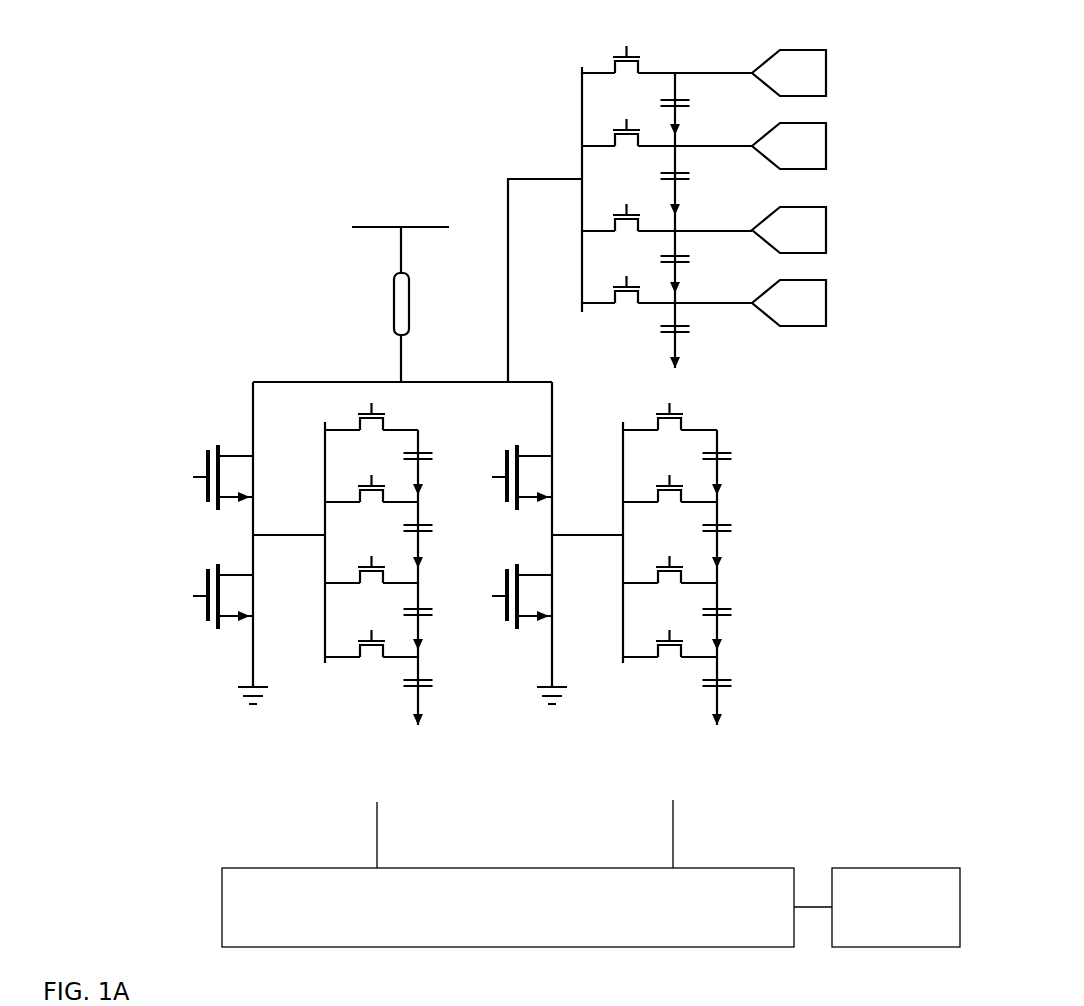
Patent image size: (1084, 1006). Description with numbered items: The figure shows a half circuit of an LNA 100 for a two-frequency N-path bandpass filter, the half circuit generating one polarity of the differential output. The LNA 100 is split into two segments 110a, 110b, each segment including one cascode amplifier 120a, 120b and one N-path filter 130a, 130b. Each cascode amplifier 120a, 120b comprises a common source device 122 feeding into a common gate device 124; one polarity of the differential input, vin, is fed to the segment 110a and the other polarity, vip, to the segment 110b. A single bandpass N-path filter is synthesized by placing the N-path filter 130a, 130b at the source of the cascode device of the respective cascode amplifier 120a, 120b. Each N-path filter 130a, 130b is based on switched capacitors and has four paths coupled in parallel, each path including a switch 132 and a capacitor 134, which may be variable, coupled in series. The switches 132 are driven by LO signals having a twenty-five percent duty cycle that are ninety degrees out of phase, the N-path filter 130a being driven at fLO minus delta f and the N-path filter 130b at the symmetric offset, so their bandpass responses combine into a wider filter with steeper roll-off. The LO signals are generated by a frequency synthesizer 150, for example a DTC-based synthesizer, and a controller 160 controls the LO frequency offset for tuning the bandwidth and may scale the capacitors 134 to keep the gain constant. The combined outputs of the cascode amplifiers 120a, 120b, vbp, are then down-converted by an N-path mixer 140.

The LNA 100 is at (263, 235).
The first segment 110a is at (282, 732).
The second segment 110b is at (583, 728).
The first cascode amplifier 120a is at (188, 527).
The second cascode amplifier 120b is at (493, 528).
The common source device 122 is at (210, 457).
The common gate device 124 is at (210, 618).
The first N-path filter 130a is at (305, 492).
The second N-path filter 130b is at (760, 538).
The switch 132 is at (360, 413).
The capacitor 134 is at (422, 452).
The N-path mixer 140 is at (562, 120).
The frequency synthesizer 150 is at (758, 869).
The controller 160 is at (882, 869).